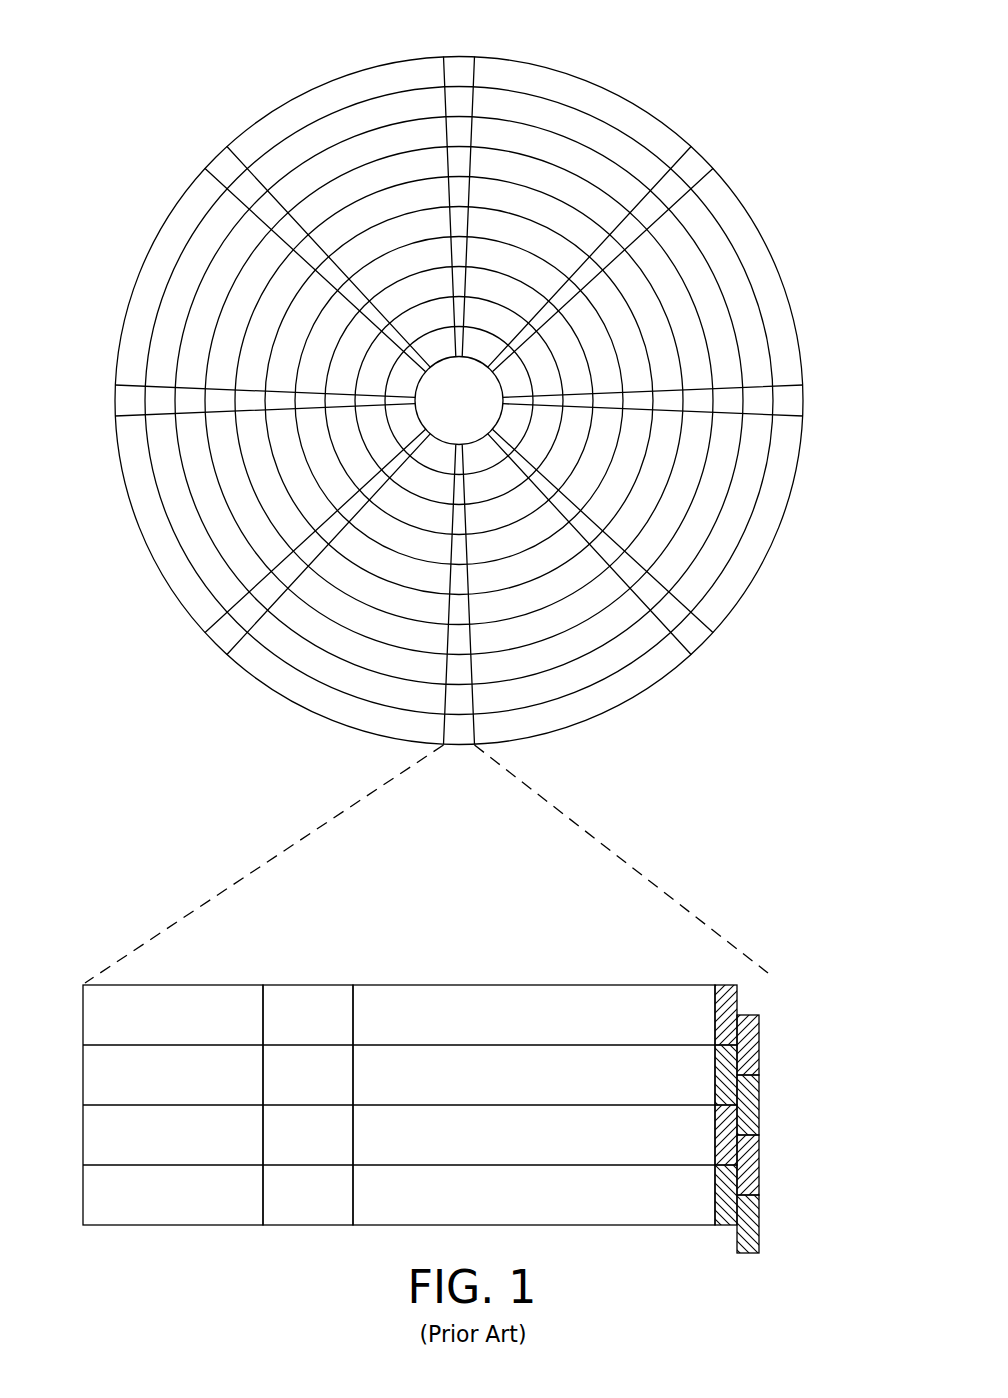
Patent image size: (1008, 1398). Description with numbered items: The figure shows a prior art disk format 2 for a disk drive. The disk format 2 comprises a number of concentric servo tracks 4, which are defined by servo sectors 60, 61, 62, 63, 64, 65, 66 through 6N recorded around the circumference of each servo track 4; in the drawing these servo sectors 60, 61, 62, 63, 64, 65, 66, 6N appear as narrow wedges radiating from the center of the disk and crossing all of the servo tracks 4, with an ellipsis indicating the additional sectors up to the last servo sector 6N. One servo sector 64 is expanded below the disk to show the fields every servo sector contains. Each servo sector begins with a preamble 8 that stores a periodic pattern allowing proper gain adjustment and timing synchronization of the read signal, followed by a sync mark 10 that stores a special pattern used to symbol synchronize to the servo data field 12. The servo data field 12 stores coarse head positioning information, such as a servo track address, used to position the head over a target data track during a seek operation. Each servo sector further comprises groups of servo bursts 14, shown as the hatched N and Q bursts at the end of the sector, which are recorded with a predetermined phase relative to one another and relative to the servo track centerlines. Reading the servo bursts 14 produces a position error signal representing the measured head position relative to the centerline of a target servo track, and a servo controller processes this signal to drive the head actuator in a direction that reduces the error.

The disk format 2 is at (459, 373).
The servo track 4 is at (577, 123).
The servo sector 60 is at (460, 66).
The servo sector 61 is at (692, 165).
The servo sector 62 is at (795, 400).
The servo sector 63 is at (695, 637).
The servo sector 64 is at (306, 826).
The servo sector 65 is at (220, 640).
The servo sector 66 is at (122, 398).
The servo sector 6N is at (222, 163).
The preamble 8 is at (183, 985).
The sync mark 10 is at (315, 985).
The servo data field 12 is at (523, 985).
The servo bursts 14 is at (758, 980).